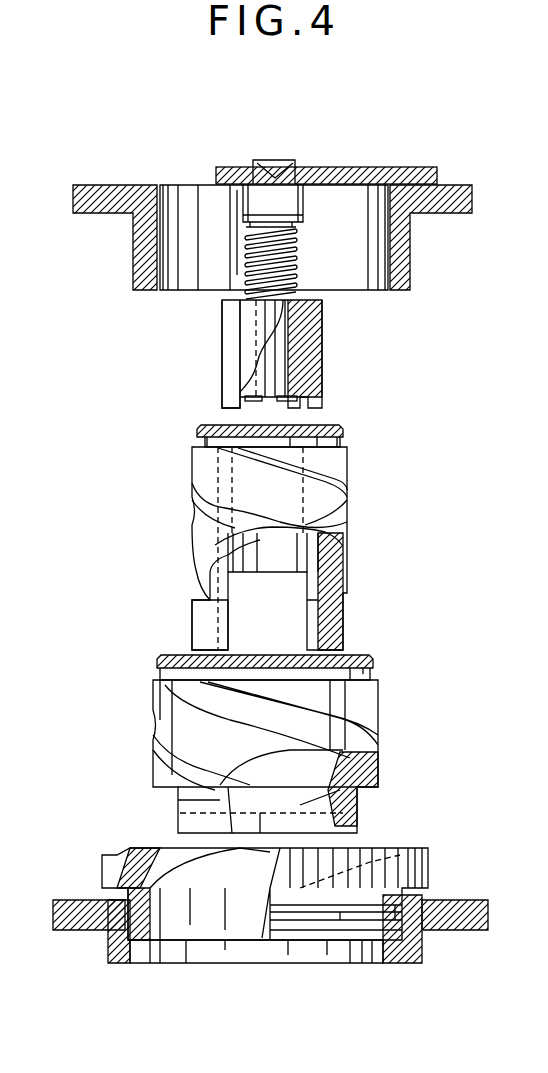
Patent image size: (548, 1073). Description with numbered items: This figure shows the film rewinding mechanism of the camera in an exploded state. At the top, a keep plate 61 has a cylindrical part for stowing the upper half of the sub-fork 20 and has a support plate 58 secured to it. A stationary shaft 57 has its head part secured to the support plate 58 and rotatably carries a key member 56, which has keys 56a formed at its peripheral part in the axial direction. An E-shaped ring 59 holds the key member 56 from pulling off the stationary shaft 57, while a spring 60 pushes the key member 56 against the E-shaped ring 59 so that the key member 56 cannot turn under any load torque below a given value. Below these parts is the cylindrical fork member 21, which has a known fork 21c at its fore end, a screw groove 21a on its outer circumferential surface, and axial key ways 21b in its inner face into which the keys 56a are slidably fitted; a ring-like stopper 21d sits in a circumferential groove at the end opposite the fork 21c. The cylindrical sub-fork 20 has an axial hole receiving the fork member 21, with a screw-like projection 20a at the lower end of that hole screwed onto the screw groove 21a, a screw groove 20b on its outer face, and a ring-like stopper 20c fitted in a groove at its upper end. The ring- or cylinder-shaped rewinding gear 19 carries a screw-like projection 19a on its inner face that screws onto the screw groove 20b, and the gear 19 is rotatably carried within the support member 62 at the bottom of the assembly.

The rewinding gear 19 is at (256, 862).
The screw-like projection 19a is at (183, 858).
The sub-fork 20 is at (280, 724).
The screw-like projection 20a is at (317, 805).
The screw groove 20b is at (327, 703).
The ring-like stopper 20c is at (173, 657).
The fork member 21 is at (273, 534).
The screw groove 21a is at (287, 463).
The key ways 21b is at (228, 555).
The fork 21c is at (207, 630).
The ring-like stopper 21d is at (343, 443).
The key member 56 is at (268, 358).
The keys 56a is at (230, 358).
The stationary shaft 57 is at (273, 347).
The support plate 58 is at (385, 175).
The E-shaped ring 59 is at (290, 401).
The spring 60 is at (293, 250).
The keep plate 61 is at (95, 197).
The support member 62 is at (73, 915).